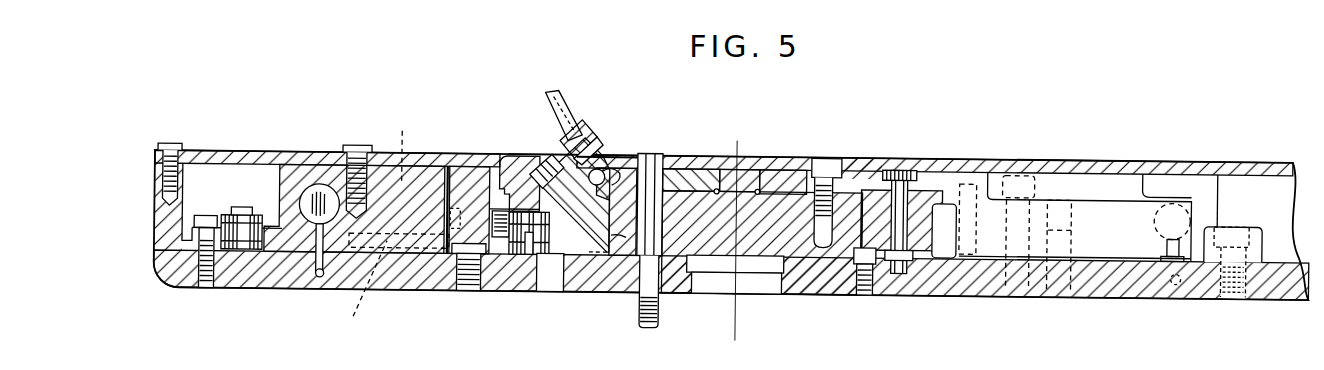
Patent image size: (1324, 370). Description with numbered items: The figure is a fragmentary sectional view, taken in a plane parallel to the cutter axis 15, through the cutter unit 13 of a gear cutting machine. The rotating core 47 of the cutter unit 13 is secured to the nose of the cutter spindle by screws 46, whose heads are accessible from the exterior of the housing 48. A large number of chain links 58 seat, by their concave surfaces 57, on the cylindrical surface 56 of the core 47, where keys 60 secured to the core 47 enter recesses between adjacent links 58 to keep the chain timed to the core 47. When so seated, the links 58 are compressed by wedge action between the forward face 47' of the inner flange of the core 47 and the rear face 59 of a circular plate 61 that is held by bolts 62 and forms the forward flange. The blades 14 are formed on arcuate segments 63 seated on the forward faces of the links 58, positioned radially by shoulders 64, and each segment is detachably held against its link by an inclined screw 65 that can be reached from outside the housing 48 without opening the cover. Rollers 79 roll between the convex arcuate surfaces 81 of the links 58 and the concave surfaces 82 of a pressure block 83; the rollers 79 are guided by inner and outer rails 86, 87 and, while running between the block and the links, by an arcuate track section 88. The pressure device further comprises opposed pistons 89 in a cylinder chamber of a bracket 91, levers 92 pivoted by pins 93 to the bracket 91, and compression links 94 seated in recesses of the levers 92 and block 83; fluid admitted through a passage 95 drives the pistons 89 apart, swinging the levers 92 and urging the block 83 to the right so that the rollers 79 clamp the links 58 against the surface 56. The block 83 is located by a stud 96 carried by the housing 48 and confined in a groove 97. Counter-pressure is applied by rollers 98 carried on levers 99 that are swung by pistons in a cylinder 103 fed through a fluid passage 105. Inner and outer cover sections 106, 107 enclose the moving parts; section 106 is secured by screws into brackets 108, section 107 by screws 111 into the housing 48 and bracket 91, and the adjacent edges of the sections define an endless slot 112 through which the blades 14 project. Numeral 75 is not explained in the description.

The cutter unit 13 is at (1086, 150).
The blades 14 is at (566, 104).
The cutter axis 15 is at (735, 308).
The screws 46 is at (672, 160).
The rotating core 47 is at (762, 265).
The forward face of the inner flange of the core 47' is at (588, 298).
The housing 48 is at (178, 272).
The cylindrical surface 56 is at (642, 250).
The concave surfaces 57 is at (622, 178).
The chain links 58 is at (570, 242).
The rear face 59 is at (600, 162).
The keys 60 is at (868, 287).
The circular plate 61 is at (775, 163).
The bolts 62 is at (826, 160).
The arcuate segments 63 is at (584, 130).
The shoulders 64 is at (540, 166).
The inclined screw 65 is at (605, 128).
The guide 75 is at (515, 168).
The rollers 79 is at (520, 250).
The convex arcuate surfaces 81 is at (530, 252).
The concave surfaces 82 is at (500, 228).
The pressure block 83 is at (462, 172).
The inner rail 86 is at (262, 228).
The outer rail 87 is at (210, 216).
The arcuate track section 88 is at (470, 258).
The pistons 89 is at (322, 190).
The bracket 91 is at (292, 163).
The levers 92 is at (361, 290).
The pins 93 is at (400, 178).
The compression links 94 is at (452, 242).
The passage 95 is at (326, 272).
The stud 96 is at (462, 275).
The groove 97 is at (472, 262).
The rollers 98 is at (922, 268).
The levers 99 is at (904, 268).
The cylinder 103 is at (1192, 212).
The fluid passage 105 is at (1180, 273).
The inner cover section 106 is at (638, 158).
The outer cover section 107 is at (468, 158).
The brackets 108 is at (1020, 165).
The screws 111 is at (172, 146).
The endless slot 112 is at (552, 122).